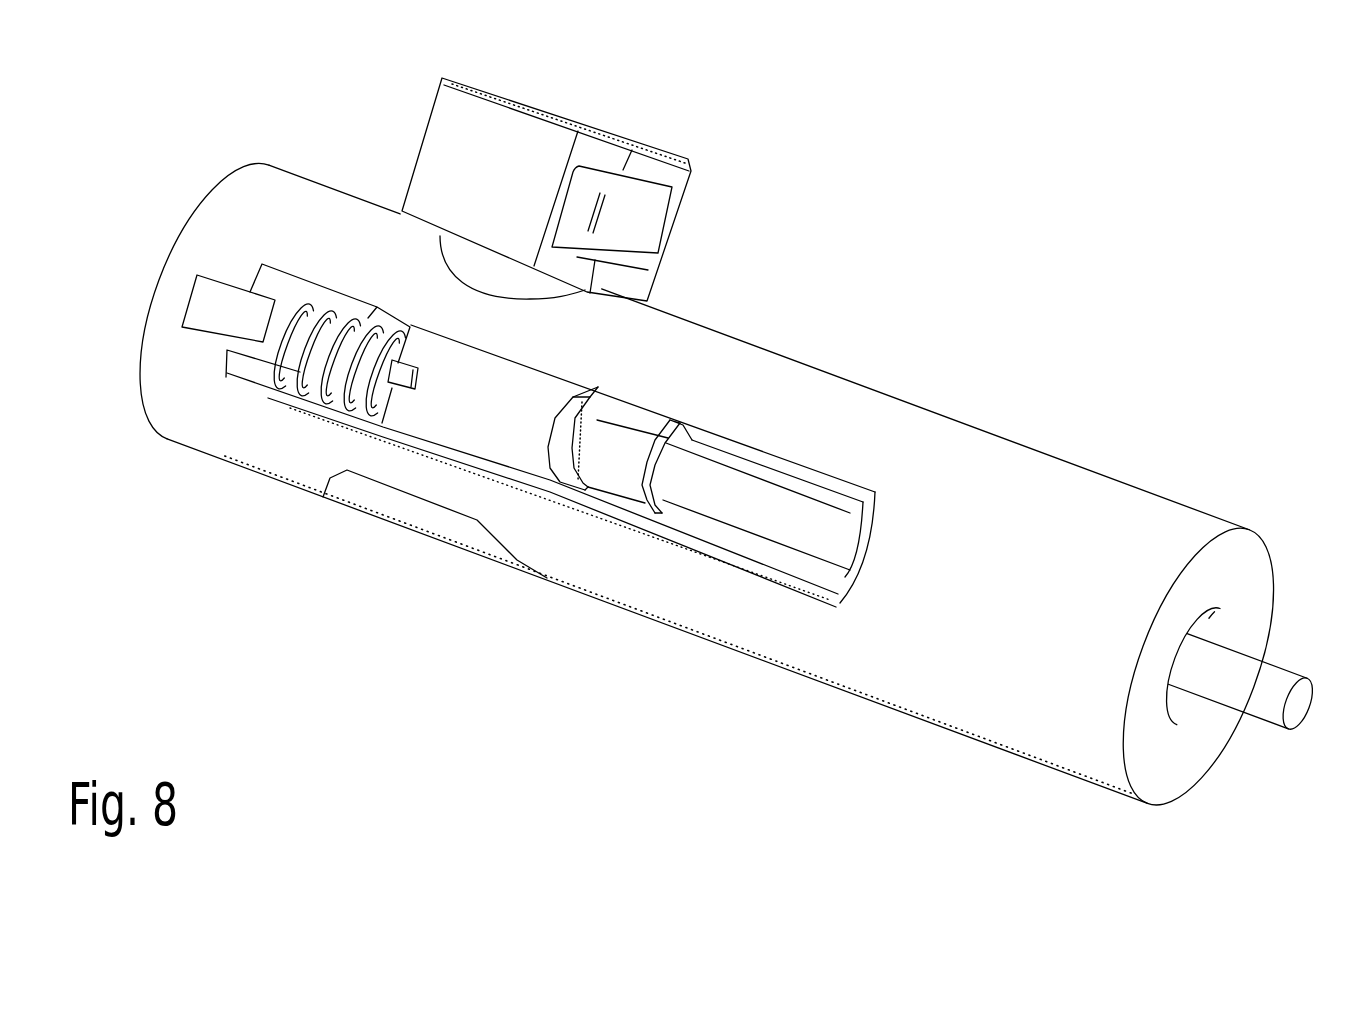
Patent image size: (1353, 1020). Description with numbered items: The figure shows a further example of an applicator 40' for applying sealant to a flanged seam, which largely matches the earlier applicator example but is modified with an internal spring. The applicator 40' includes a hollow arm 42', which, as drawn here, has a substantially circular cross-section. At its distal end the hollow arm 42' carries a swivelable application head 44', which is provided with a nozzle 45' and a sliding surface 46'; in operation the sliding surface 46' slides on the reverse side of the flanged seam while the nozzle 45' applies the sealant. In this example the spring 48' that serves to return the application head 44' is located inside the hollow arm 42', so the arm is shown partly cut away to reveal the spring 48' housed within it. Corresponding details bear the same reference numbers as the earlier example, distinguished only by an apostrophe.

The applicator 40' is at (730, 457).
The hollow arm 42' is at (730, 493).
The application head 44' is at (526, 185).
The nozzle 45' is at (683, 161).
The sliding surface 46' is at (649, 223).
The spring 48' is at (282, 419).